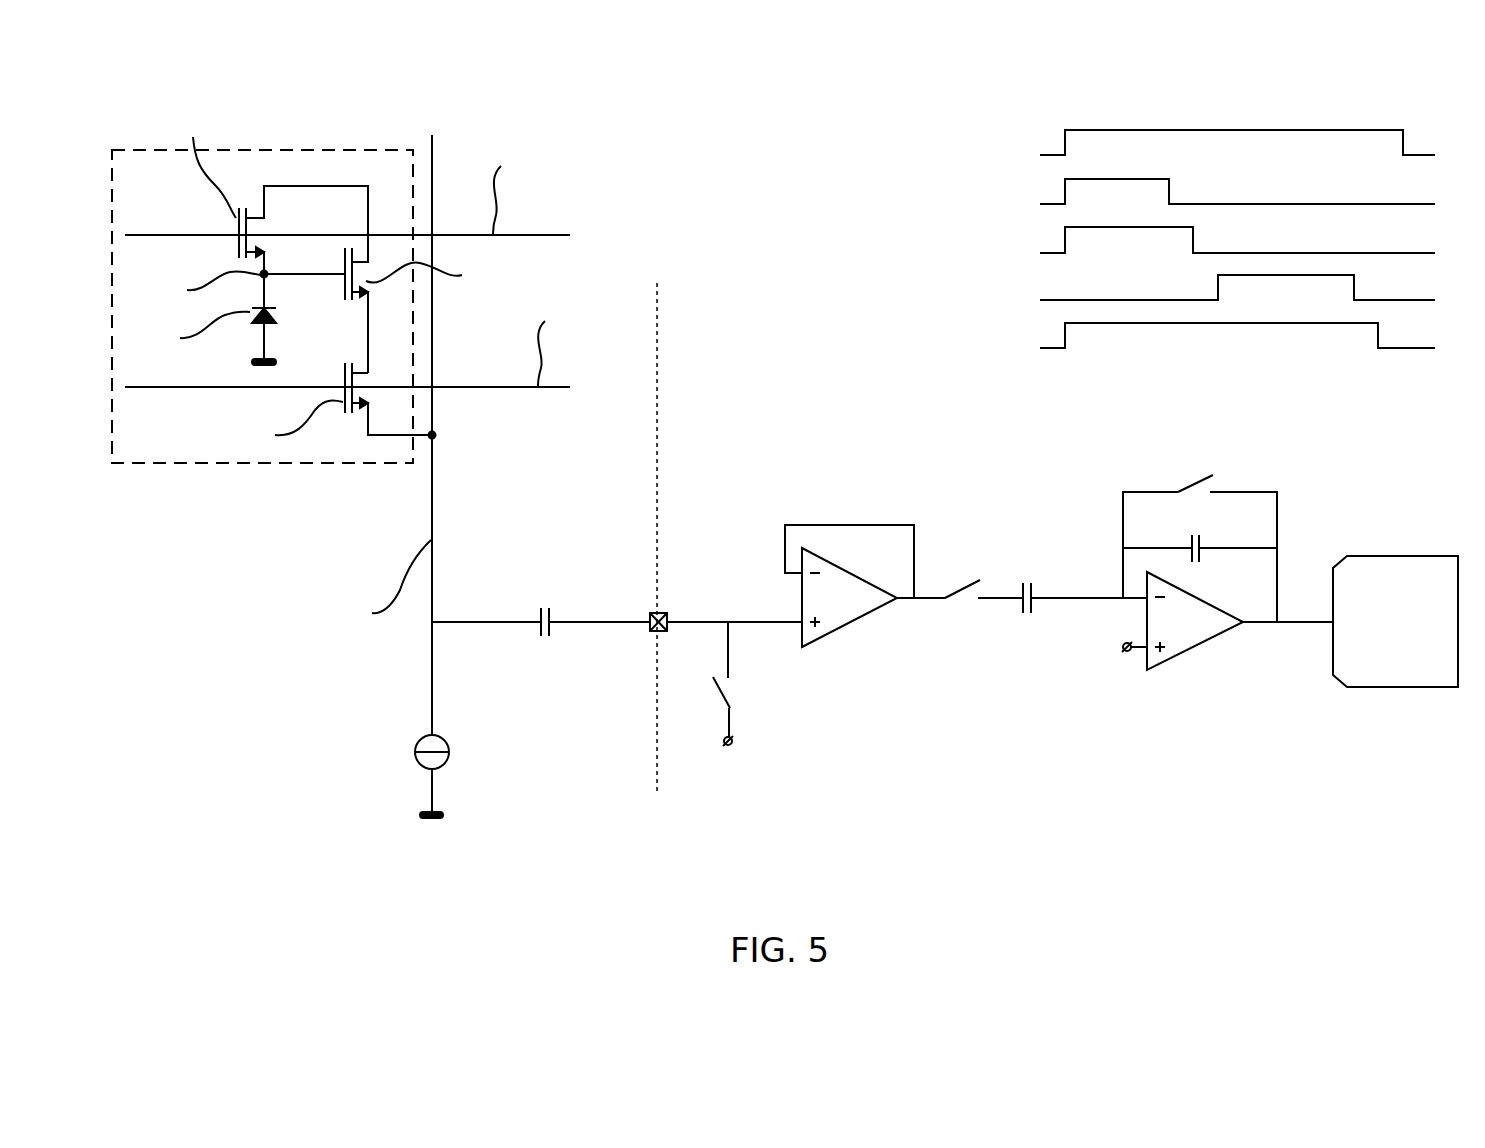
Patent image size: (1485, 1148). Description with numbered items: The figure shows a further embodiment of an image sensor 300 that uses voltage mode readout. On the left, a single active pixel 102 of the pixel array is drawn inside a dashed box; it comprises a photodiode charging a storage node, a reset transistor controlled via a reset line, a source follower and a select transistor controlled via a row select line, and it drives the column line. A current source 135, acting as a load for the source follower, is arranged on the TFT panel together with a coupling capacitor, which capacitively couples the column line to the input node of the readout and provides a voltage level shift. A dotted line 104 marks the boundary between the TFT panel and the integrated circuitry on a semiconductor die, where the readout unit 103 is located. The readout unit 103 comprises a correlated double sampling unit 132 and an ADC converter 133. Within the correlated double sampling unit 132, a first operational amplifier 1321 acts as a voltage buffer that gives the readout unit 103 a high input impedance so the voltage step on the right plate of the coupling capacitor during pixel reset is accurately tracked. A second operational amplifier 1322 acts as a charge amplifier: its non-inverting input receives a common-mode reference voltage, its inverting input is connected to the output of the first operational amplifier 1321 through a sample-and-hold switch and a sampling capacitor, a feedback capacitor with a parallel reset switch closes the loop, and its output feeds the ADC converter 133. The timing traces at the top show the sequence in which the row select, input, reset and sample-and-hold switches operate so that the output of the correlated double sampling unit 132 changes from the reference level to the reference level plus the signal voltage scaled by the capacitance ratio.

The image sensor 300 is at (790, 73).
The active pixel 102 is at (202, 472).
The readout unit 103 is at (663, 790).
The dotted line 104 is at (655, 470).
The correlated double sampling unit 132 is at (1300, 445).
The ADC converter 133 is at (1392, 552).
The current source 135 is at (450, 750).
The first operational amplifier 1321 is at (840, 627).
The second operational amplifier 1322 is at (1196, 655).